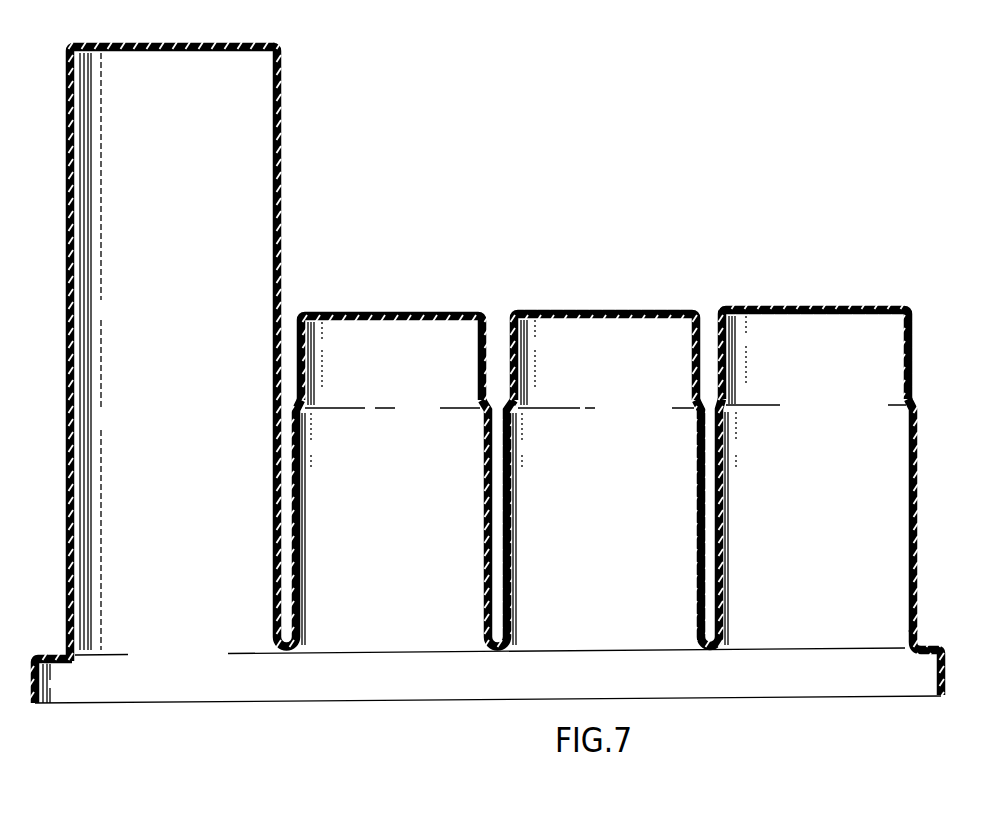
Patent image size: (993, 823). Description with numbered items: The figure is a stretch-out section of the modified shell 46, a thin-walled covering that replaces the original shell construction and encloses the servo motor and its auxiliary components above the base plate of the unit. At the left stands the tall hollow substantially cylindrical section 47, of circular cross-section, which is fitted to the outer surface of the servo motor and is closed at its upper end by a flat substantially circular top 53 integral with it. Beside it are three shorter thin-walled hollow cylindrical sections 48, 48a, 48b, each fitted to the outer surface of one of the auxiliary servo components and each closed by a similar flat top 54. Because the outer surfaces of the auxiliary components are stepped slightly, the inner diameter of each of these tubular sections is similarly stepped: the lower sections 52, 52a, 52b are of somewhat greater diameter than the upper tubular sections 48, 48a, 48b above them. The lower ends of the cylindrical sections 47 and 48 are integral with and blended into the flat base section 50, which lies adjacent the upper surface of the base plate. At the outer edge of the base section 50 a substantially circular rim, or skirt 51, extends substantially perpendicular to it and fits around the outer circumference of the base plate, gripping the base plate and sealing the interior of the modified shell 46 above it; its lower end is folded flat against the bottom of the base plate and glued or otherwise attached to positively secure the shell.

The modified shell 46 is at (392, 467).
The hollow substantially cylindrical section 47 is at (193, 339).
The thin-walled hollow cylindrical section 48 is at (303, 379).
The thin-walled hollow cylindrical section 48a is at (519, 379).
The tubular section 48b is at (912, 372).
The flat base section 50 is at (57, 651).
The rim or skirt 51 is at (34, 657).
The lower section 52 is at (300, 478).
The lower section 52a is at (512, 472).
The lower section 52b is at (917, 456).
The flat substantially circular top 53 is at (148, 46).
The flat top 54 is at (613, 465).